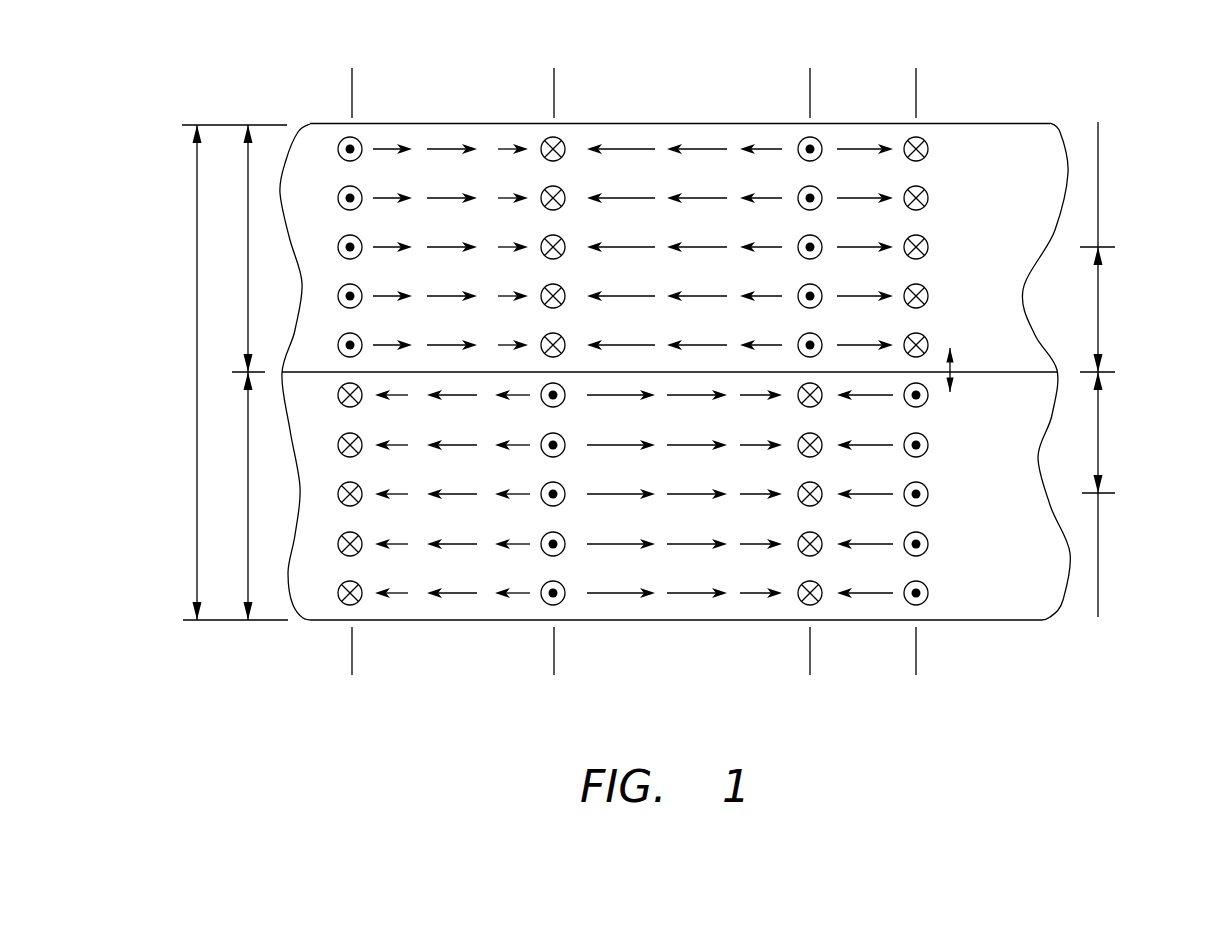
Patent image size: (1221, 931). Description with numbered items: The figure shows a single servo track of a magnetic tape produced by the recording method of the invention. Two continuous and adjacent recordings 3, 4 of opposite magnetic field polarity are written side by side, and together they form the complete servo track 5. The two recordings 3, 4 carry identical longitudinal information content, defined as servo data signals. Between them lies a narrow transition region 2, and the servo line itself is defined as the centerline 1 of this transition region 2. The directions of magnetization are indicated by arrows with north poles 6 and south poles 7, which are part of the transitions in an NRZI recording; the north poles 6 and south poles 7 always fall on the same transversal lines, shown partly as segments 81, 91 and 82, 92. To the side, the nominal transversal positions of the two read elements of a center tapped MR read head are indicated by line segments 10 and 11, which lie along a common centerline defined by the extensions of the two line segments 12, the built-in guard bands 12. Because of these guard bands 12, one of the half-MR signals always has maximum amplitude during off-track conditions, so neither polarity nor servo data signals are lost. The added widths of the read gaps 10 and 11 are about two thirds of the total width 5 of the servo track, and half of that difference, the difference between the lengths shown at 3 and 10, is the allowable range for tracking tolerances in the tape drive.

The centerline 1 is at (999, 365).
The narrow transition region 2 is at (959, 377).
The recording 3 is at (247, 292).
The recording 4 is at (247, 528).
The servo track 5 is at (197, 395).
The north poles 6 is at (828, 336).
The south poles 7 is at (828, 411).
The read gap 10 is at (1105, 295).
The read gap 11 is at (1105, 434).
The guard bands 12 is at (1105, 170).
The transversal line segment 81 is at (362, 95).
The transversal line segment 82 is at (820, 95).
The transversal line segment 91 is at (564, 95).
The transversal line segment 92 is at (926, 95).